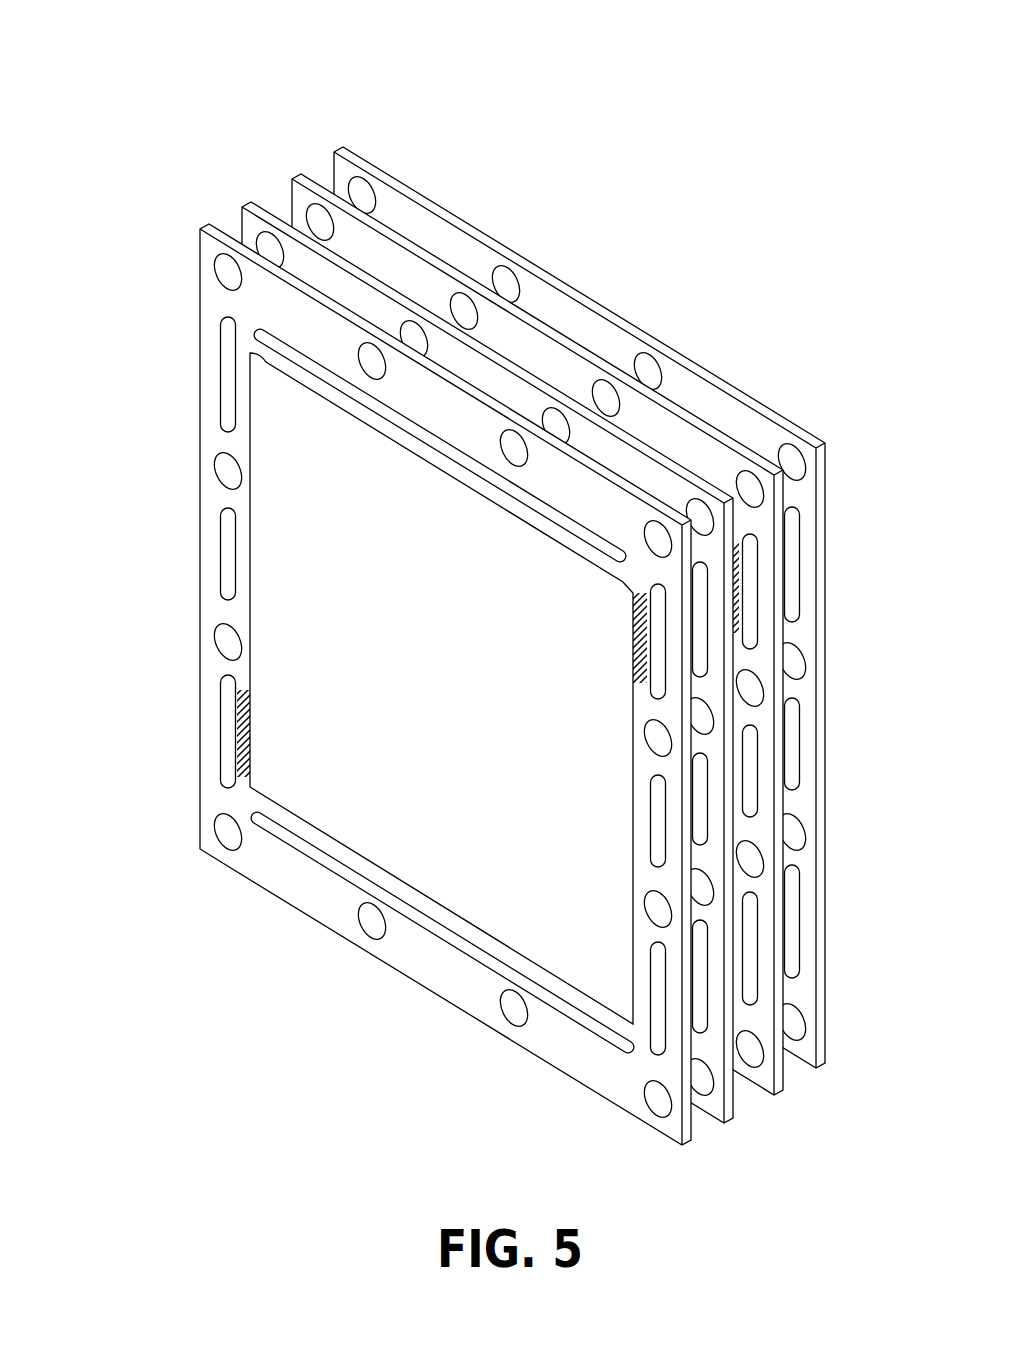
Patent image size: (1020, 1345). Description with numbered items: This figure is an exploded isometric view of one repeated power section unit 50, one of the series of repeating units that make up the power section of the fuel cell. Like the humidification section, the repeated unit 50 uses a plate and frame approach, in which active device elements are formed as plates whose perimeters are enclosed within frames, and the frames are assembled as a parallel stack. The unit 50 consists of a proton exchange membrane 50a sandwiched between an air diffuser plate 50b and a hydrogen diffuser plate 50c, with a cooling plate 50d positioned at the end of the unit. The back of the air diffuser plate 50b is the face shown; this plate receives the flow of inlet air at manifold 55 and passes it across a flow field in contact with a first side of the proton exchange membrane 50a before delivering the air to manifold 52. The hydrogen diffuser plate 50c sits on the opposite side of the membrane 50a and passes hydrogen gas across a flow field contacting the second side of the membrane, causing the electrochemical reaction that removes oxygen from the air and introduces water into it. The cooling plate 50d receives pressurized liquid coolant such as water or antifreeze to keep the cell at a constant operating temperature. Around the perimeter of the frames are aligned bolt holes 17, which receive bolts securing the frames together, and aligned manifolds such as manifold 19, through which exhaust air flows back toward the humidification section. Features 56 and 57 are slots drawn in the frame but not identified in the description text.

The repeated power section unit 50 is at (448, 604).
The proton exchange membrane 50a is at (234, 196).
The air diffuser plate 50b is at (190, 220).
The hydrogen diffuser plate 50c is at (285, 167).
The cooling plate 50d is at (330, 139).
The bolt holes 17 is at (215, 461).
The manifold 19 is at (667, 1028).
The manifold 52 is at (220, 762).
The manifold 55 is at (647, 623).
The top slot 56 is at (268, 362).
The bottom slot 57 is at (582, 1028).